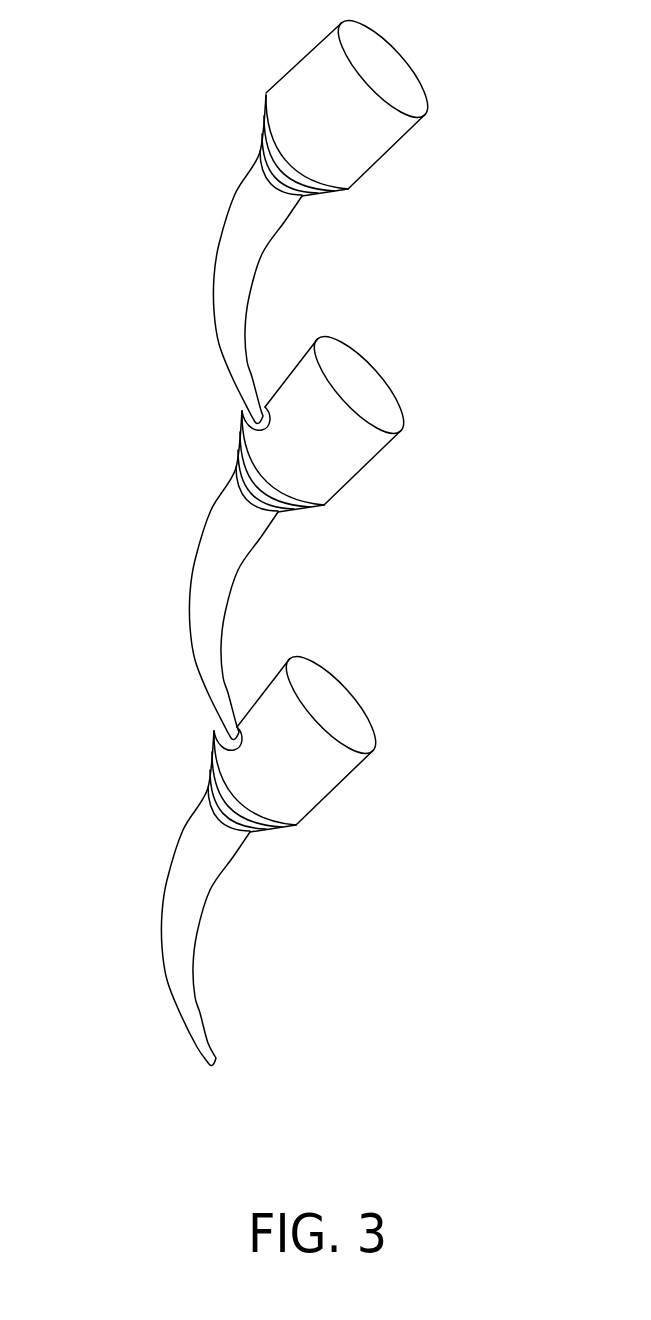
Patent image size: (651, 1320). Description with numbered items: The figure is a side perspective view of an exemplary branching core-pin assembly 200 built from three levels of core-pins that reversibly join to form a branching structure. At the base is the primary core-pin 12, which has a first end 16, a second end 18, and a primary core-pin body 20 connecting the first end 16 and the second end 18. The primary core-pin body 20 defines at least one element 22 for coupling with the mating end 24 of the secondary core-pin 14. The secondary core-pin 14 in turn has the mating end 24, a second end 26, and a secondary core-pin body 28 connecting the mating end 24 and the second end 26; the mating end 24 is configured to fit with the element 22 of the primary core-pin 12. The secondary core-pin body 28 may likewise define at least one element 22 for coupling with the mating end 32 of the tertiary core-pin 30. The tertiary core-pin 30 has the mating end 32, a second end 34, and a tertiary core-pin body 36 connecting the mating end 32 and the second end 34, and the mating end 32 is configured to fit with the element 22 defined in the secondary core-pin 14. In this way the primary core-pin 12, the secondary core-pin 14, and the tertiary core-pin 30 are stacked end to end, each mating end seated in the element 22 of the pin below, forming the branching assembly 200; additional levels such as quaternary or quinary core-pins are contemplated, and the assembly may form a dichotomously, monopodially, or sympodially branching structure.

The assembly 200 is at (158, 239).
The primary core-pin 12 is at (308, 868).
The secondary core-pin 14 is at (331, 538).
The tertiary core-pin 30 is at (357, 220).
The first end 16 is at (193, 1046).
The second end 18 is at (311, 738).
The primary core-pin body 20 is at (306, 777).
The element 22 is at (233, 710).
The mating end 24 is at (205, 582).
The second end 26 is at (339, 418).
The secondary core-pin body 28 is at (355, 392).
The mating end 32 is at (231, 264).
The second end 34 is at (363, 102).
The tertiary core-pin body 36 is at (379, 76).